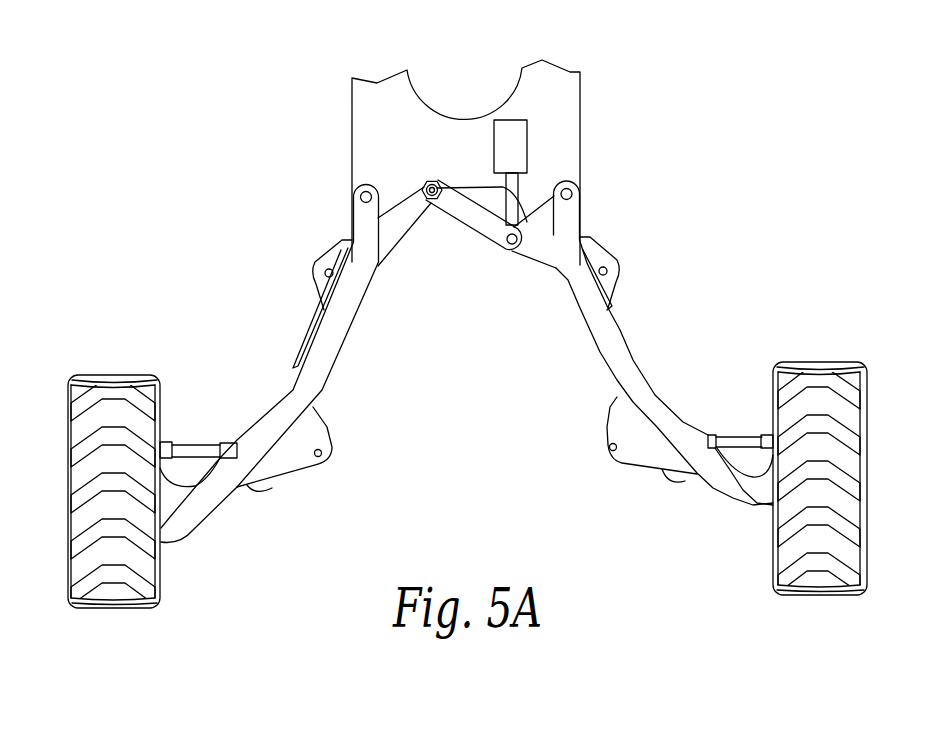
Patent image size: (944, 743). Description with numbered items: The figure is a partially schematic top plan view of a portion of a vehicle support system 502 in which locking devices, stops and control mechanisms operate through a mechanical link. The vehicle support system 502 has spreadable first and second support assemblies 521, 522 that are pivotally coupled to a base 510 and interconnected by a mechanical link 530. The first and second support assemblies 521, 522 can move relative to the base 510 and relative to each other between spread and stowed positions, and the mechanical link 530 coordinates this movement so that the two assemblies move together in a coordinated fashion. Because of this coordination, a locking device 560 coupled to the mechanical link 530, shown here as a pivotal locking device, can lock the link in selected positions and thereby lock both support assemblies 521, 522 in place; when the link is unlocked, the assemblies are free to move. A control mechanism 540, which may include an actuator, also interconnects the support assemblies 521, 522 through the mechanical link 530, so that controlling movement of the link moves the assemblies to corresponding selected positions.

The vehicle support system 502 is at (507, 478).
The base 510 is at (358, 100).
The first support assembly 521 is at (273, 409).
The second support assembly 522 is at (668, 412).
The mechanical link 530 is at (484, 187).
The control mechanism 540 is at (527, 145).
The locking device 560 is at (423, 205).